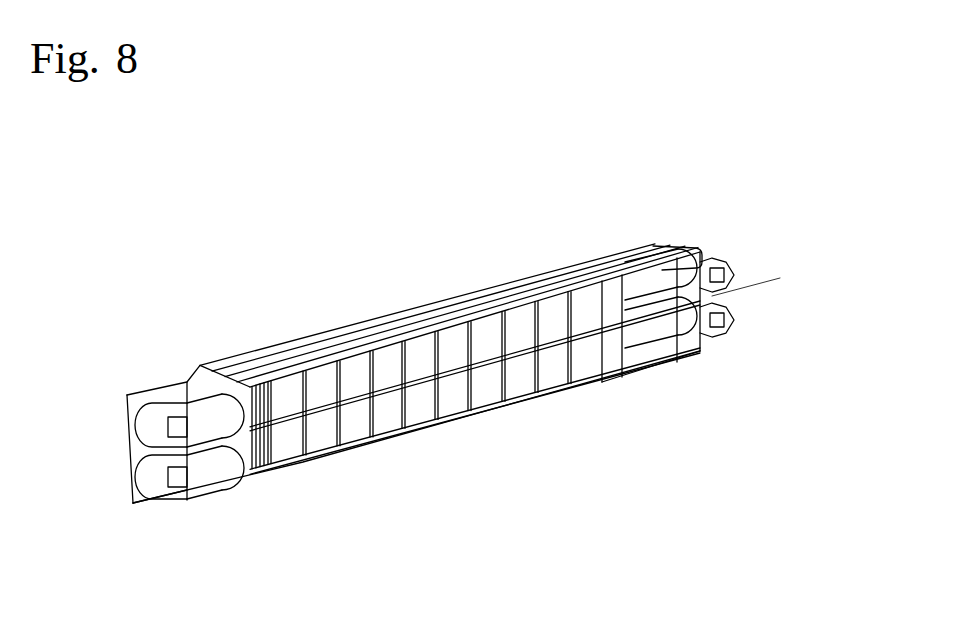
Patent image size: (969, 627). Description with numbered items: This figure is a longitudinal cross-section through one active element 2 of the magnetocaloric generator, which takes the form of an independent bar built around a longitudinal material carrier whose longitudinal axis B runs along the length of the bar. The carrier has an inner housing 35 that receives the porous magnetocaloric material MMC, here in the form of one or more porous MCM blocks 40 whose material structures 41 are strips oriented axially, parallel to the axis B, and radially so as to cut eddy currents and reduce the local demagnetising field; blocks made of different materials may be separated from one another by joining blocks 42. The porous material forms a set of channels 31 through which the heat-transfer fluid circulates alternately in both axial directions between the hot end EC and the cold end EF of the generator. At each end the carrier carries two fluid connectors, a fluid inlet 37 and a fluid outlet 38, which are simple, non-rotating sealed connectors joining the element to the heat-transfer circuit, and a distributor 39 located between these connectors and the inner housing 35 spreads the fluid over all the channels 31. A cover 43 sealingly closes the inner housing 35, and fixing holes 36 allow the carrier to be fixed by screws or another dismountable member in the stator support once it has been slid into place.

The active element 2 is at (415, 381).
The channels 31 is at (496, 400).
The inner housing 35 is at (484, 318).
The fixing holes 36 is at (160, 392).
The fluid inlet 37 is at (134, 430).
The fluid outlet 38 is at (133, 503).
The distributor 39 is at (250, 392).
The porous MCM block 40 is at (407, 400).
The material structures 41 is at (284, 445).
The joining blocks 42 is at (372, 403).
The cover 43 is at (387, 328).
The hot end EC is at (752, 246).
The cold end EF is at (113, 465).
The longitudinal axis B is at (746, 278).
The magnetocaloric material (MCM) MMC is at (558, 364).